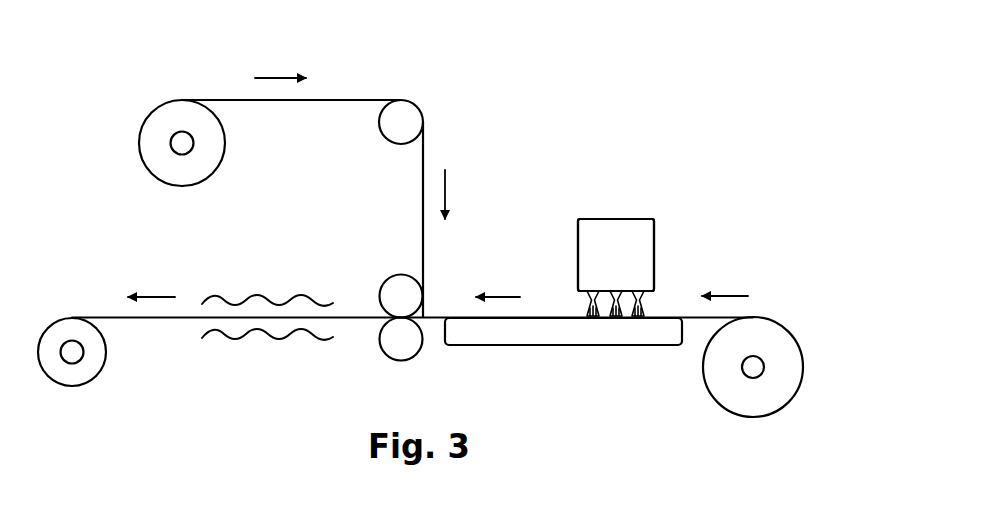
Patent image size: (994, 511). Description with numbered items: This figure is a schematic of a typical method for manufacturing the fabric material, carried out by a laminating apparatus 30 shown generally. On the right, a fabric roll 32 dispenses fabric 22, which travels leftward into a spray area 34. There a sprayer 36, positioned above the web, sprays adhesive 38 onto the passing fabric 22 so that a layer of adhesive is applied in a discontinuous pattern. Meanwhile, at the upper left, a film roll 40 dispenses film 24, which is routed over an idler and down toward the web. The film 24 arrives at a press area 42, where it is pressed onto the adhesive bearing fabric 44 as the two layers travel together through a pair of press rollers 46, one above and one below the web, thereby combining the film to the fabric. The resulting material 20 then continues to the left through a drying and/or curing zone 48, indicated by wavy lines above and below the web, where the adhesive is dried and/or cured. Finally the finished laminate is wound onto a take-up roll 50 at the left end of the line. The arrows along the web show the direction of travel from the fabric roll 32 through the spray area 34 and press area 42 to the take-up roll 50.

The resulting material 20 is at (98, 317).
The fabric 22 is at (722, 316).
The film 24 is at (340, 100).
The laminating apparatus 30 is at (668, 121).
The fabric roll 32 is at (752, 417).
The spray area 34 is at (563, 215).
The sprayer 36 is at (648, 232).
The adhesive 38 is at (643, 310).
The film roll 40 is at (148, 113).
The press area 42 is at (428, 365).
The adhesive bearing fabric 44 is at (433, 317).
The press rollers 46 is at (397, 275).
The drying and/or curing zone 48 is at (247, 350).
The take-up roll 50 is at (52, 325).